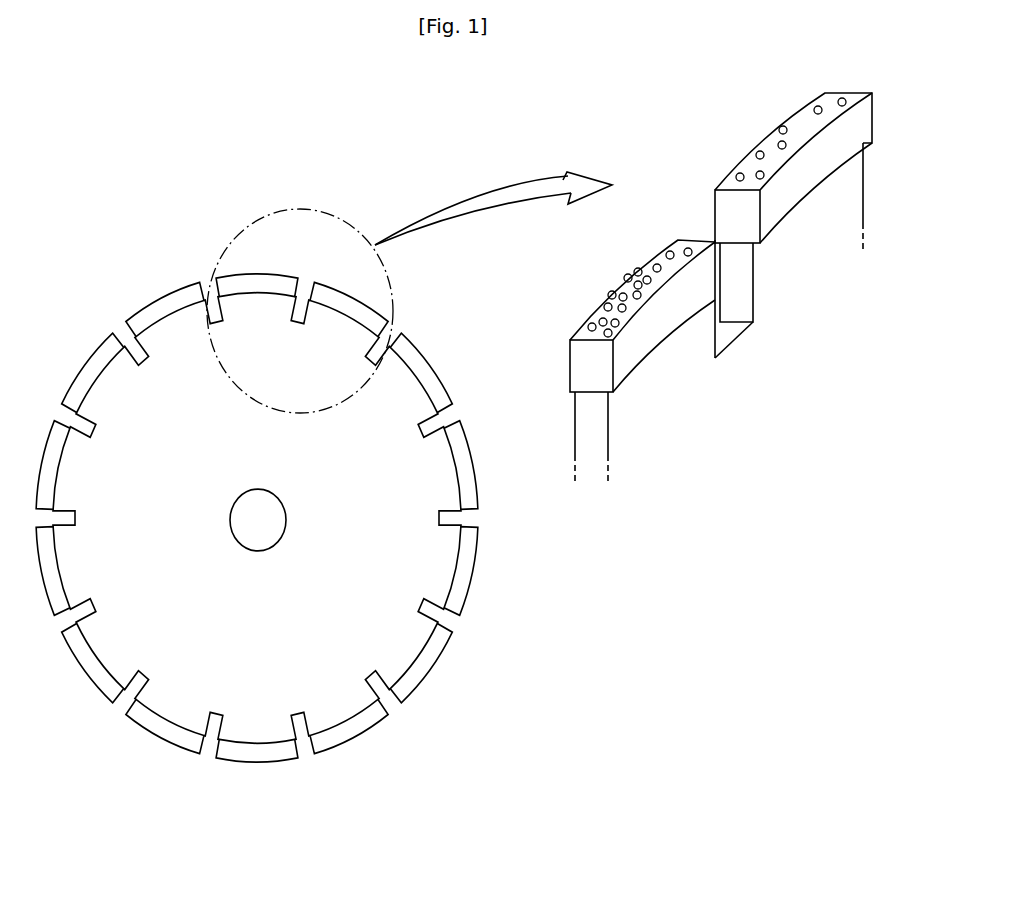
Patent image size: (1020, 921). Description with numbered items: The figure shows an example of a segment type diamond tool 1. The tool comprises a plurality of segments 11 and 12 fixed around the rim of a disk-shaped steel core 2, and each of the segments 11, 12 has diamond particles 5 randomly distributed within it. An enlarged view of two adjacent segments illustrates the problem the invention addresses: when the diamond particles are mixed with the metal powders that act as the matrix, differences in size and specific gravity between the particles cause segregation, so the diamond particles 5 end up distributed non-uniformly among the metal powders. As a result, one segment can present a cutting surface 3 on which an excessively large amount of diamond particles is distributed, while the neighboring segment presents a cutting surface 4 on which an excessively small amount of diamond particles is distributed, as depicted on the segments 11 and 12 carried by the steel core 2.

The diamond saw blade 1 is at (366, 103).
The disk-shaped steel core 2 is at (175, 717).
The cutting surface 3 is at (612, 355).
The cutting surface 4 is at (793, 184).
The diamond particles 5 is at (628, 277).
The segment 11 is at (647, 345).
The segment 12 is at (793, 188).